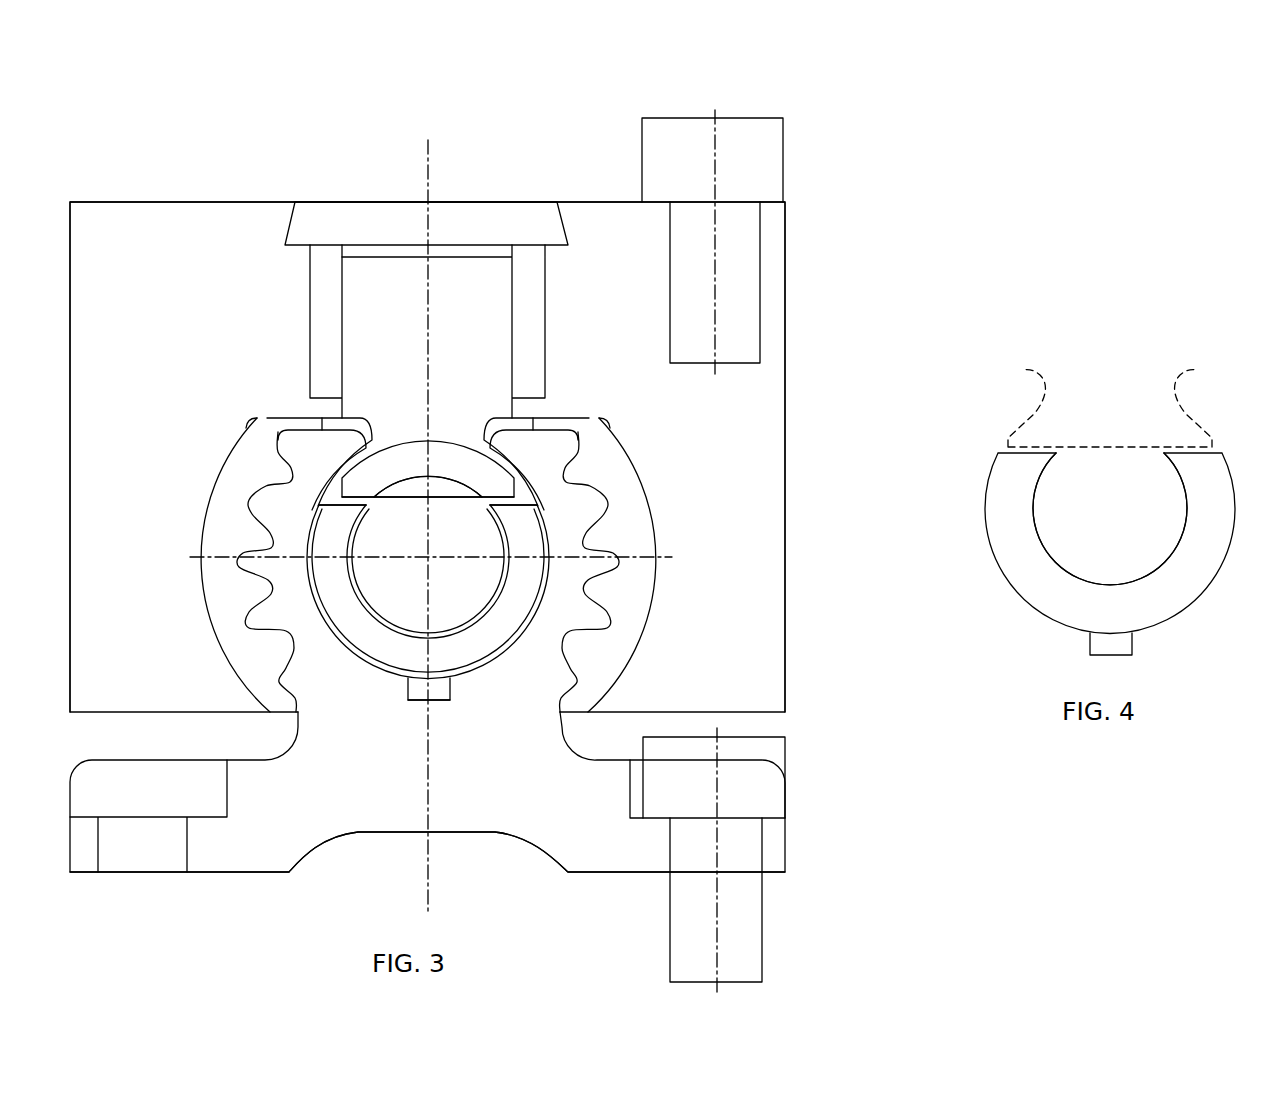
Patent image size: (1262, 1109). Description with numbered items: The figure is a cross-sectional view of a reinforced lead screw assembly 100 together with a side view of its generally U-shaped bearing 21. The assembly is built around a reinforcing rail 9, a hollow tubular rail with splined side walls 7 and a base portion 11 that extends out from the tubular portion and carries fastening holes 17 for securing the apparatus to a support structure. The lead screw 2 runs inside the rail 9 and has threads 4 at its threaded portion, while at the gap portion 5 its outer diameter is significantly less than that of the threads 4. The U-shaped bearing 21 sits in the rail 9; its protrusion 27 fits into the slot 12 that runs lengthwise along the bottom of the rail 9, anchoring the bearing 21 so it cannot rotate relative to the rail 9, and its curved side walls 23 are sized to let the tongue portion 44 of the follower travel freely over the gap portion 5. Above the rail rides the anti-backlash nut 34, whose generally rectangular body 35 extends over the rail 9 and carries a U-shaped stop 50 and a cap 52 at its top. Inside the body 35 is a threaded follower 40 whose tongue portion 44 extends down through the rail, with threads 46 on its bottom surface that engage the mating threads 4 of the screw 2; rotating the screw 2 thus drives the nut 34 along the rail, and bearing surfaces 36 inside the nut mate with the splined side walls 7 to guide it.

In FIG. 3, the lead screw assembly 100 is at (819, 147).
In FIG. 3, the anti-backlash nut 34 is at (150, 201).
In FIG. 3, the nut body 35 is at (126, 279).
In FIG. 3, the cap 52 is at (442, 218).
In FIG. 3, the U-shaped stop 50 is at (310, 318).
In FIG. 3, the threaded follower 40 is at (502, 338).
In FIG. 3, the bearing surfaces 36 is at (240, 458).
In FIG. 3, the splined side walls 7 is at (318, 476).
In FIG. 3, the tongue portion 44 is at (413, 426).
In FIG. 4, the tongue portion 44 is at (1124, 393).
In FIG. 3, the threads 4 is at (490, 500).
In FIG. 3, the gap portion 5 is at (492, 505).
In FIG. 3, the follower threads 46 is at (402, 513).
In FIG. 4, the follower threads 46 is at (1104, 462).
In FIG. 3, the lead screw 2 is at (456, 543).
In FIG. 3, the U-shaped bearing 21 is at (537, 547).
In FIG. 4, the U-shaped bearing 21 is at (974, 468).
In FIG. 3, the curved side walls 23 is at (341, 590).
In FIG. 4, the curved side walls 23 is at (1024, 516).
In FIG. 3, the protrusion 27 is at (422, 685).
In FIG. 4, the protrusion 27 is at (1107, 637).
In FIG. 3, the reinforcing rail 9 is at (523, 706).
In FIG. 3, the slot 12 is at (438, 700).
In FIG. 3, the base portion 11 is at (585, 826).
In FIG. 3, the fastening holes 17 is at (738, 845).